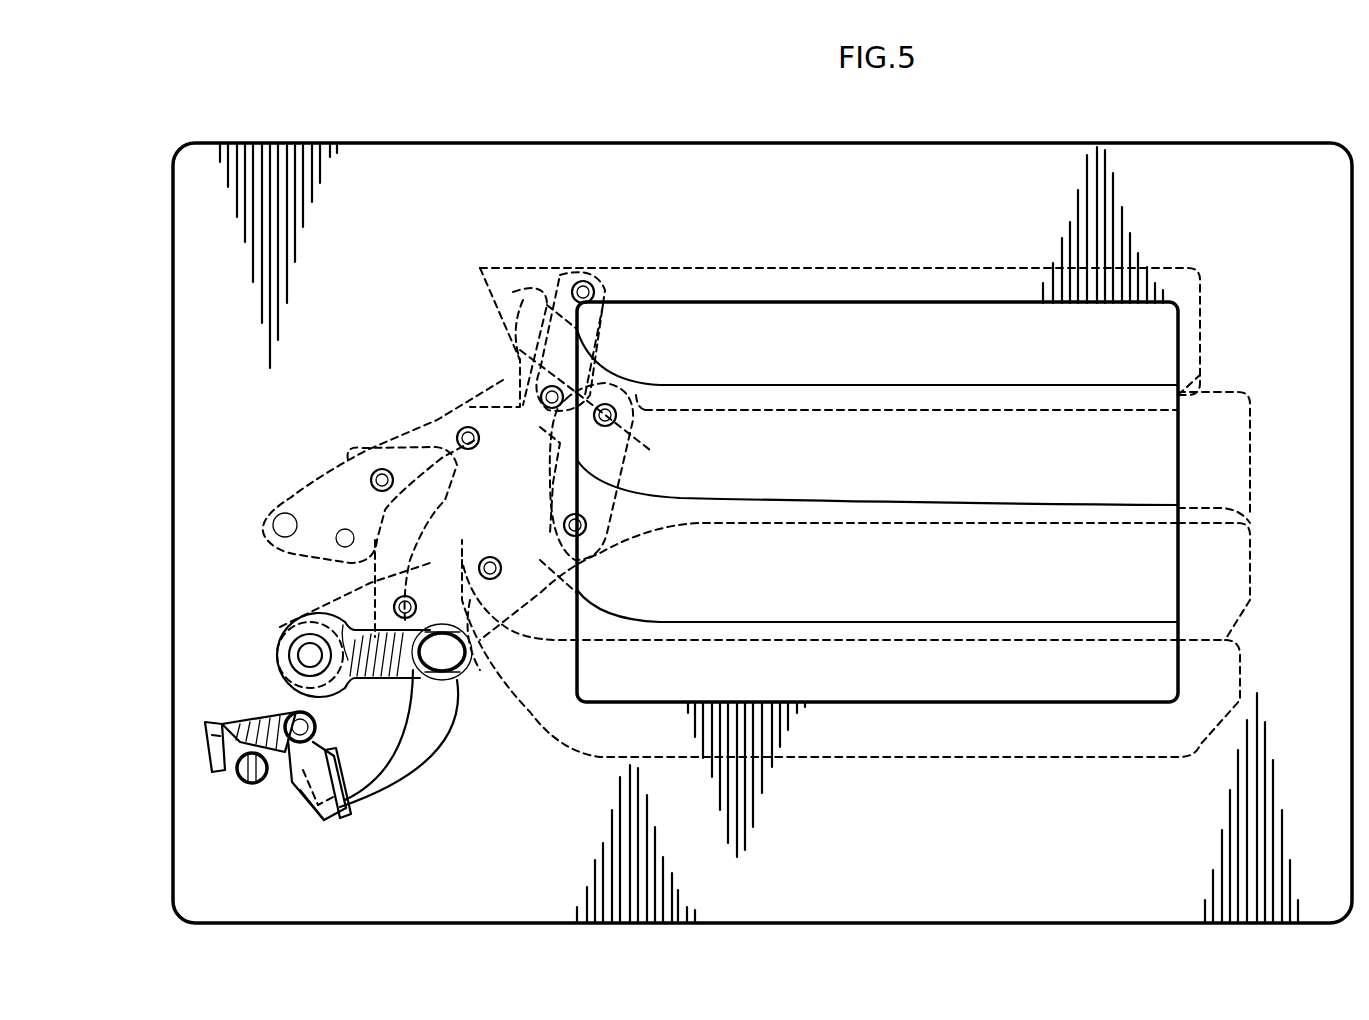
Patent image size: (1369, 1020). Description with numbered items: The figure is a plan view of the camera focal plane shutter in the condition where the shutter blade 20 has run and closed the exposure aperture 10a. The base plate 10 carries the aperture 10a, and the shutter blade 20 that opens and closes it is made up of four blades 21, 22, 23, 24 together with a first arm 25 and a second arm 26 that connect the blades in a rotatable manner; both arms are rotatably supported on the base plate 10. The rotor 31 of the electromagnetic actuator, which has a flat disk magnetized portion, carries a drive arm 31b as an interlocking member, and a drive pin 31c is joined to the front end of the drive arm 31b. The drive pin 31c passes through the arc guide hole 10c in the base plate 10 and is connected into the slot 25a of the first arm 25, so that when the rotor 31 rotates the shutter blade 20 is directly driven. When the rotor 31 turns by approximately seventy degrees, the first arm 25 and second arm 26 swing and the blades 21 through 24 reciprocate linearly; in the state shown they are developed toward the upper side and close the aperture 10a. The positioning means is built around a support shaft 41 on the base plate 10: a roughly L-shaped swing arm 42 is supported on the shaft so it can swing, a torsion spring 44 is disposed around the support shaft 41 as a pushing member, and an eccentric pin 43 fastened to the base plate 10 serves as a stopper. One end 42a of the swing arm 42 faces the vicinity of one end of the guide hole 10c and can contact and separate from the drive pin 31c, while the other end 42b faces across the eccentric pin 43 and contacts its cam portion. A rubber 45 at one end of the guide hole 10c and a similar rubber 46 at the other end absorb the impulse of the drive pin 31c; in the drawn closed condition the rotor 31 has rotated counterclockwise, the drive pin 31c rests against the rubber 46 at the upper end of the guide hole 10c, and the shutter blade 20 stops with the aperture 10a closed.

The base plate 10 is at (735, 143).
The exposure aperture 10a is at (955, 326).
The arc guide hole 10c is at (420, 735).
The shutter blade 20 is at (830, 266).
The blade 21 is at (1203, 343).
The blade 22 is at (1252, 450).
The blade 23 is at (1252, 565).
The blade 24 is at (1242, 677).
The first arm 25 is at (615, 512).
The slot 25a is at (500, 690).
The second arm 26 is at (505, 388).
The rotor 31 is at (270, 617).
The drive arm 31b is at (362, 630).
The drive pin 31c is at (440, 665).
The support shaft 41 is at (290, 715).
The swing arm 42 is at (295, 778).
The one end of the swing arm 42a is at (335, 825).
The other end of the swing arm 42b is at (215, 763).
The eccentric pin 43 is at (246, 782).
The torsion spring 44 is at (243, 717).
The rubber 45 is at (352, 812).
The rubber 46 is at (478, 628).